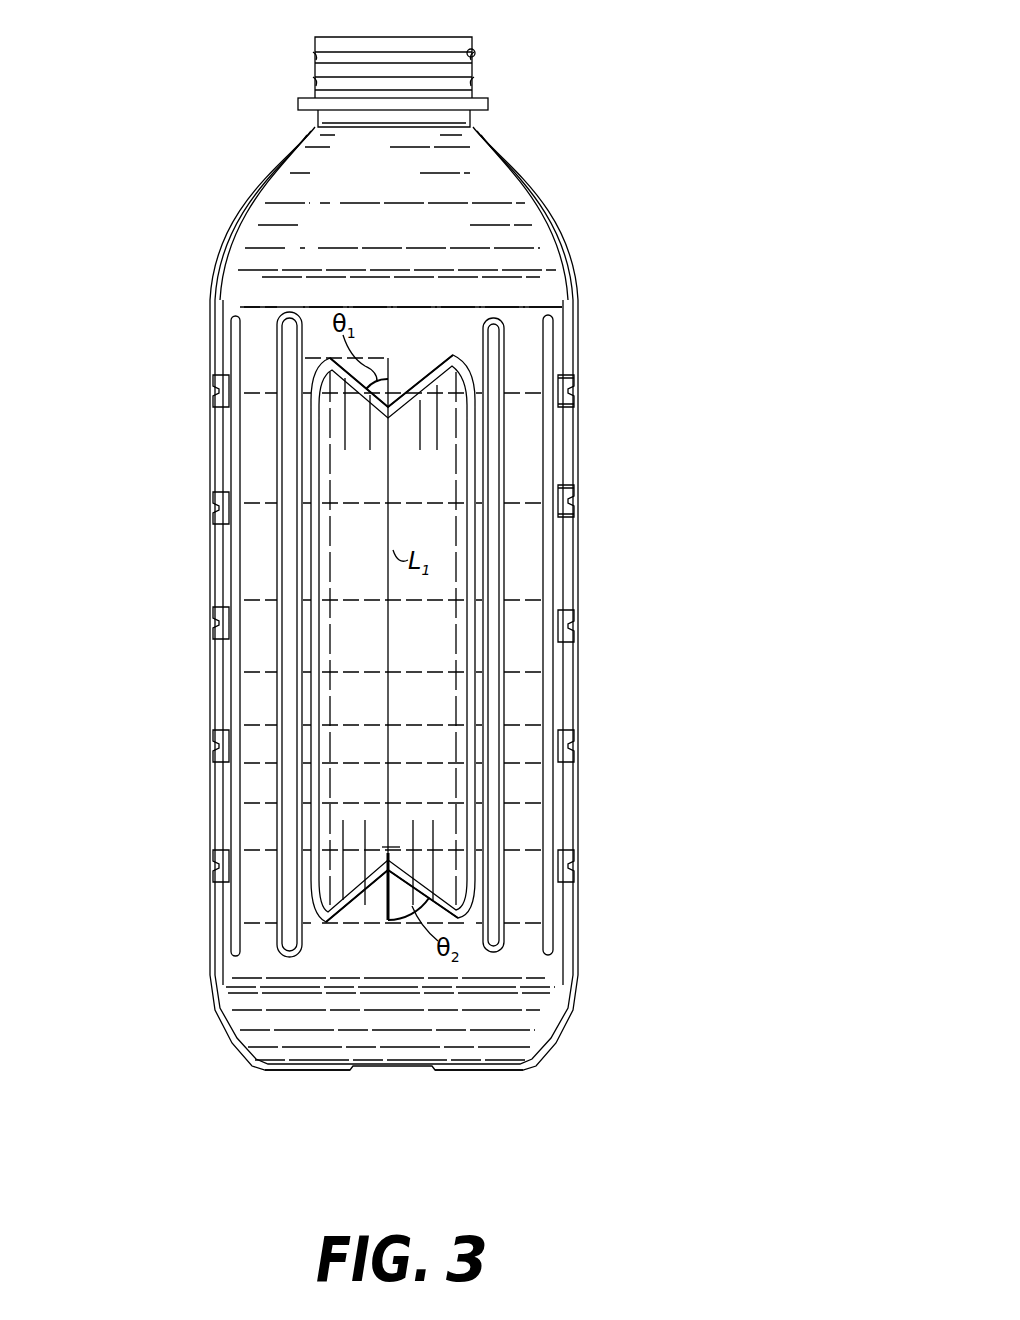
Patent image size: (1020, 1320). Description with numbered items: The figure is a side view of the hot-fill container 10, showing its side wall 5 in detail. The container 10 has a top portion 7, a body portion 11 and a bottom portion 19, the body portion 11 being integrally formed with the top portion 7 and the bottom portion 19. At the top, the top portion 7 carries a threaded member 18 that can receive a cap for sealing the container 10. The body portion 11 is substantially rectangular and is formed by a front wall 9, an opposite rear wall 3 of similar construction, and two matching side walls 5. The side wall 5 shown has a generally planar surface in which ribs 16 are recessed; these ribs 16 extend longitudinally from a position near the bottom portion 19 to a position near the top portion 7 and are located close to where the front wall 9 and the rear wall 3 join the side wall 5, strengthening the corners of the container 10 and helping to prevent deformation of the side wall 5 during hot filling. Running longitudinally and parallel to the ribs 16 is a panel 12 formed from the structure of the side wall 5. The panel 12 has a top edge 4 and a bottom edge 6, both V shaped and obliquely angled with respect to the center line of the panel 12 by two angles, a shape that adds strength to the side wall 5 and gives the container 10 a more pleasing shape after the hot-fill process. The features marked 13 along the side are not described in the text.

The rear wall 3 is at (576, 694).
The top edge 4 is at (427, 382).
The side wall 5 is at (554, 283).
The bottom edge 6 is at (372, 922).
The top portion 7 is at (302, 197).
The front wall 9 is at (210, 553).
The container 10 is at (618, 215).
The body portion 11 is at (240, 970).
The panel 12 is at (403, 480).
The ribs 13 is at (569, 385).
The ribs 16 is at (297, 308).
The threaded member 18 is at (475, 51).
The bottom portion 19 is at (467, 1071).